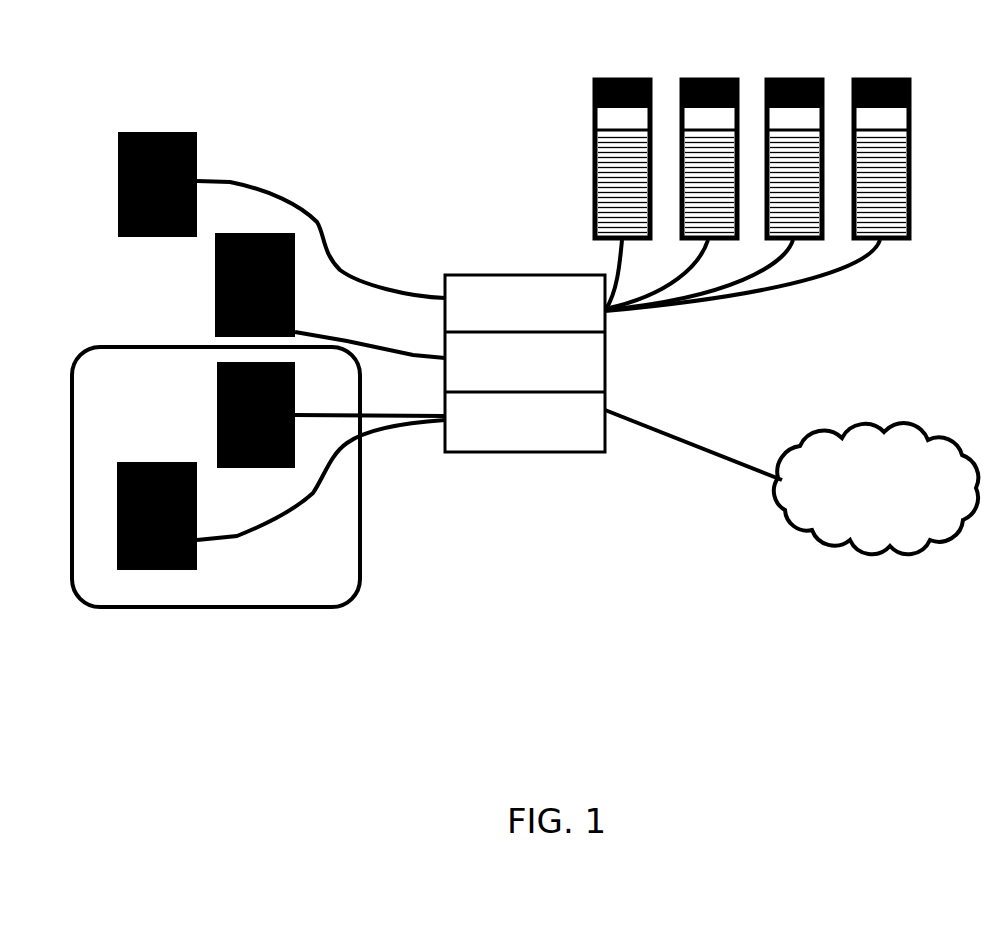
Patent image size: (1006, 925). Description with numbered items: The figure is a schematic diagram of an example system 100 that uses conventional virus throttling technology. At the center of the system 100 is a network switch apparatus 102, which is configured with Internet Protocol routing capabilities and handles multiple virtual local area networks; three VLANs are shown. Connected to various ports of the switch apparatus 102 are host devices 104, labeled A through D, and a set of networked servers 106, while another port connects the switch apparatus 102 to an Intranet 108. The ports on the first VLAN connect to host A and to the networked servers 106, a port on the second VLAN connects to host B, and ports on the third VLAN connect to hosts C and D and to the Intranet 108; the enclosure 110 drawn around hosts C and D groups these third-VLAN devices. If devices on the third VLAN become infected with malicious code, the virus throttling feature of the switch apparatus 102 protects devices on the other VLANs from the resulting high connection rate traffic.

The system 100 is at (949, 834).
The network switch apparatus 102 is at (525, 380).
The host devices 104 is at (251, 351).
The networked servers 106 is at (752, 172).
The Intranet 108 is at (791, 482).
The client group boundary 110 is at (362, 590).